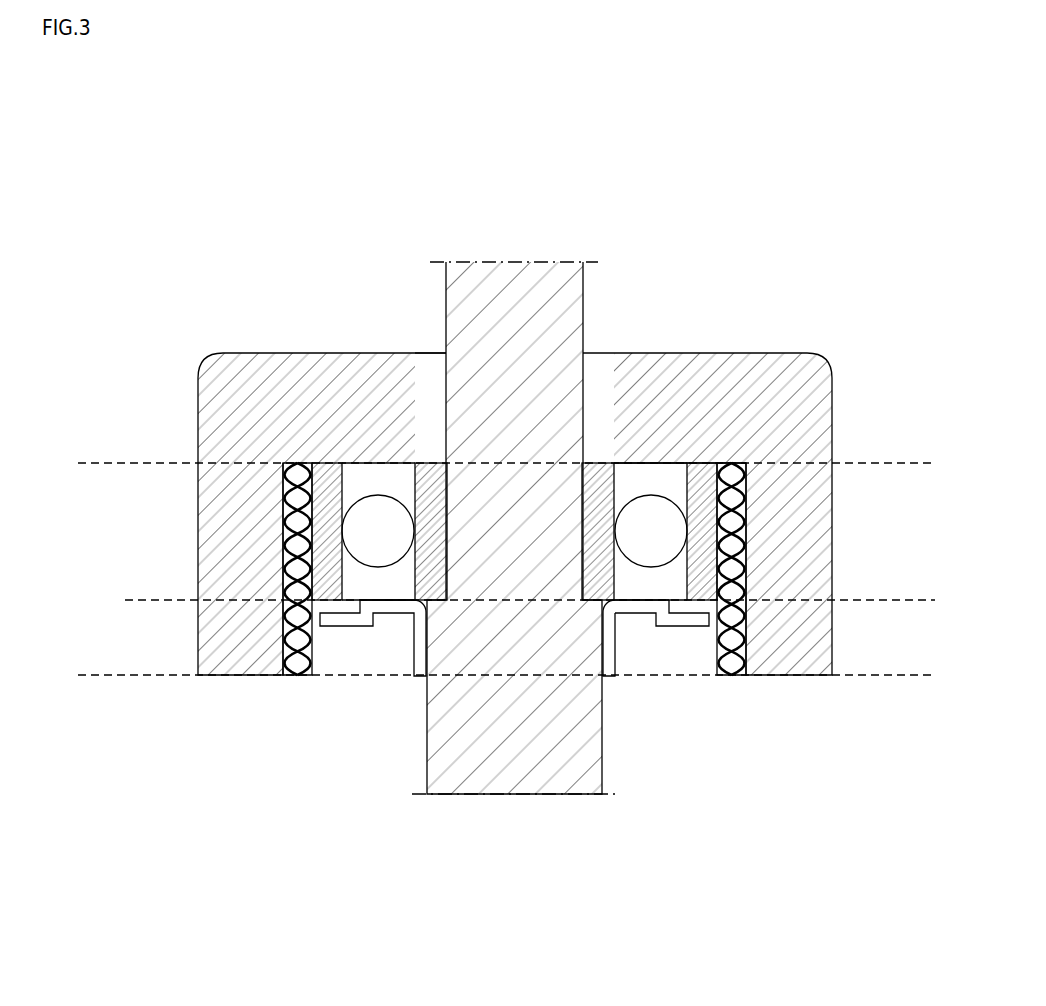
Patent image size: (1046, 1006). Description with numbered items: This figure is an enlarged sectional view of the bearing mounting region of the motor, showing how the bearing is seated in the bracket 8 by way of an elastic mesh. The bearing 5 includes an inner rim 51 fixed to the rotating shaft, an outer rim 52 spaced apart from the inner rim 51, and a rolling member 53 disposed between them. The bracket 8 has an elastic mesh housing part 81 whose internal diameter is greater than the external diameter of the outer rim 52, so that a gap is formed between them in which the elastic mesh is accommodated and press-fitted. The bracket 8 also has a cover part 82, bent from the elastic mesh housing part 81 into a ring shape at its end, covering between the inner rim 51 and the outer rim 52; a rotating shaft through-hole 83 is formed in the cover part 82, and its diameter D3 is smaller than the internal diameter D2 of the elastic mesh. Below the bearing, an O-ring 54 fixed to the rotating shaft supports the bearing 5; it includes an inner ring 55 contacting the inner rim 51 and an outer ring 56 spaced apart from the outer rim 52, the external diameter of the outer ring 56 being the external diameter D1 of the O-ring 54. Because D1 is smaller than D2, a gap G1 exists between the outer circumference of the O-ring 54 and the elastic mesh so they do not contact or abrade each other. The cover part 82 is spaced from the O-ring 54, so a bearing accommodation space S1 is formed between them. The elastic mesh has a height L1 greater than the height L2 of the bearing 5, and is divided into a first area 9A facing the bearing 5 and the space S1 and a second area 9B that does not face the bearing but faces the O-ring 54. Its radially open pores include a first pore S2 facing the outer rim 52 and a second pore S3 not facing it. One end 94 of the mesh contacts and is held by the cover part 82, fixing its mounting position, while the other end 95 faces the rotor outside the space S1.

The bracket 8 is at (536, 442).
The elastic mesh housing part 81 is at (795, 522).
The cover part 82 is at (633, 363).
The rotating shaft through-hole 83 is at (430, 365).
The one end of the elastic mesh 94 is at (301, 546).
The other end of the elastic mesh 95 is at (306, 677).
The bearing 5 is at (684, 407).
The inner rim 51 is at (598, 475).
The outer rim 52 is at (705, 475).
The rolling member 53 is at (650, 507).
The O-ring 54 is at (656, 698).
The inner ring 55 is at (637, 606).
The outer ring 56 is at (690, 622).
The gap G1 is at (745, 617).
The bearing accommodation space S1 is at (348, 606).
The first pore S2 is at (293, 481).
The second pore S3 is at (293, 645).
The height L1 is at (84, 463).
The height of the bearing L2 is at (132, 463).
The first area 9A is at (928, 463).
The second area 9B is at (928, 600).
The external diameter of the O-ring D1 is at (321, 627).
The internal diameter of the elastic mesh D2 is at (312, 676).
The diameter of the rotating shaft through-hole D3 is at (613, 463).